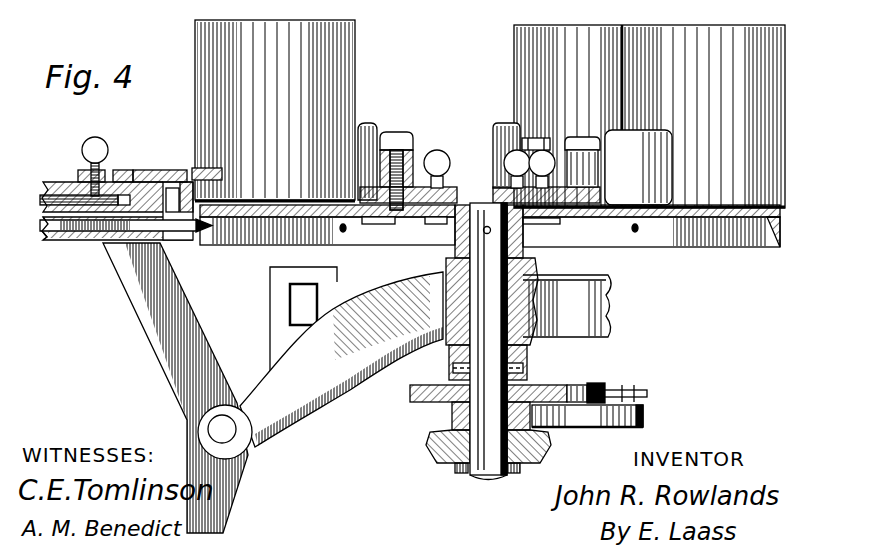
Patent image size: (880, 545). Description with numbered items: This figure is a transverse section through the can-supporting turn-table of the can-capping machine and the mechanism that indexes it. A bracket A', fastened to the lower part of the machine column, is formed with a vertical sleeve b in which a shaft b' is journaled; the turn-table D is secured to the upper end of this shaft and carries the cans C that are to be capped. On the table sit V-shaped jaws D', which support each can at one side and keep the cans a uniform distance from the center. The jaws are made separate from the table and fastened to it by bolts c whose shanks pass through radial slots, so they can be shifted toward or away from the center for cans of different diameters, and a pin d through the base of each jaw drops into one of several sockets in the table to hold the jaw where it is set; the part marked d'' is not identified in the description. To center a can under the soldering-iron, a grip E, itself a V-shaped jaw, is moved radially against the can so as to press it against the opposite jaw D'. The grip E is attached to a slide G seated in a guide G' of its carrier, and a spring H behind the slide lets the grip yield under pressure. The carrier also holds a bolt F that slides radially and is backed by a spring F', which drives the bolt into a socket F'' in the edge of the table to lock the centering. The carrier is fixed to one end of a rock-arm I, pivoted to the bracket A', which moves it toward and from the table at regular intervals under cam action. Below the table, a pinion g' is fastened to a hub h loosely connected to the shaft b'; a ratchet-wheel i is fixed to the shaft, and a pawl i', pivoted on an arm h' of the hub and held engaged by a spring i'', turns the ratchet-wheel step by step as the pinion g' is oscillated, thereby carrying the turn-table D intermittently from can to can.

The bracket A' is at (429, 365).
The vertical sleeve b is at (472, 292).
The shaft b' is at (488, 341).
The cans C is at (490, 114).
The bolts c is at (393, 224).
The turn-table D is at (490, 243).
The V-shaped jaws D' is at (515, 153).
The pin d is at (480, 158).
The opening d'' is at (425, 244).
The grip E is at (175, 182).
The bolt F is at (125, 250).
The spring F' is at (60, 248).
The socket F'' is at (151, 249).
The slide G is at (97, 171).
The guide G' is at (86, 168).
The spring H is at (78, 183).
The hub h is at (464, 418).
The arm h' is at (587, 430).
The rock-arm I is at (175, 388).
The ratchet-wheel i is at (473, 395).
The pawl i' is at (577, 378).
The spring i'' is at (617, 376).
The pinion g' is at (470, 453).